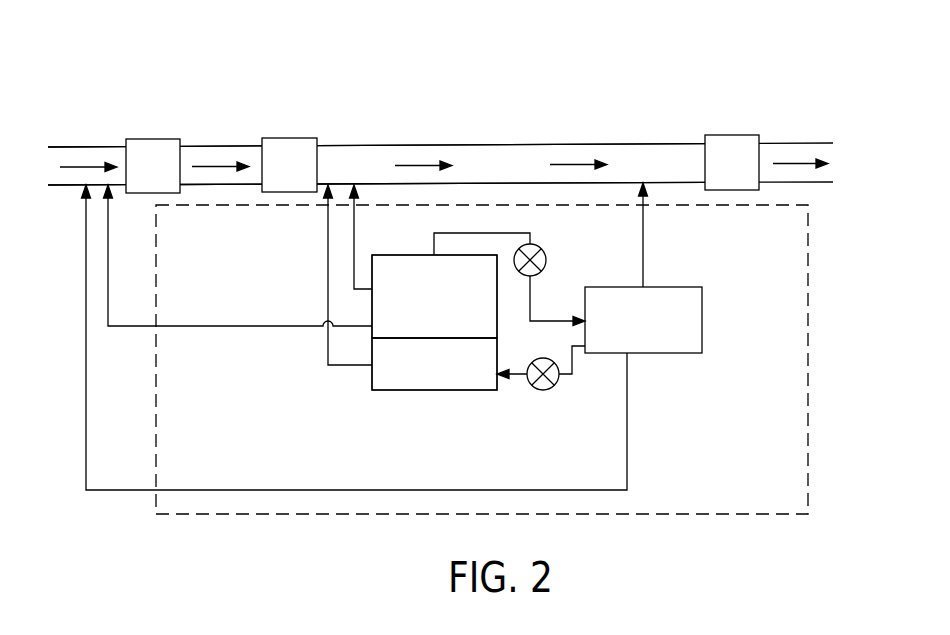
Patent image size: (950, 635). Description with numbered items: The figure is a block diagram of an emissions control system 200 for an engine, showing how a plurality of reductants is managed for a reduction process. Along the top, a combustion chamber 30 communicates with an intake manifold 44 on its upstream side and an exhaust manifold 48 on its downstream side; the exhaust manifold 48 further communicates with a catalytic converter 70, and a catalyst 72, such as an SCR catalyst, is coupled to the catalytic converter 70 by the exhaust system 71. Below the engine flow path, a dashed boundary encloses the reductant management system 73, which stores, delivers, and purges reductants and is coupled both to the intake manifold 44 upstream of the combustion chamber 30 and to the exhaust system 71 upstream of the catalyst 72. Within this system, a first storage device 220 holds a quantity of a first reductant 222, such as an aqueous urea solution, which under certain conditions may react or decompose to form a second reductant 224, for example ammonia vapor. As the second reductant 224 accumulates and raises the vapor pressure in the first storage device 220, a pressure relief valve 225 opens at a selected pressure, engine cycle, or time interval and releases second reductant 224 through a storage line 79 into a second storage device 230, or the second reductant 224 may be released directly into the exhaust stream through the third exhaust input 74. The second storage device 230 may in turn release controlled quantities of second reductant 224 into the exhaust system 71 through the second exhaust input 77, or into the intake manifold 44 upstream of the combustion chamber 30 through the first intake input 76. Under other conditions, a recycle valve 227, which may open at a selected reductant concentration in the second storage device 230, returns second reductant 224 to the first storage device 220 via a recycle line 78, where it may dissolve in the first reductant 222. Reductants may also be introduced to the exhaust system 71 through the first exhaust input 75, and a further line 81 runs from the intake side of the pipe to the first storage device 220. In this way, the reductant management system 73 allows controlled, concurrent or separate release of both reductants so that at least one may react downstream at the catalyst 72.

The emissions control system 200 is at (707, 70).
The intake manifold 44 is at (87, 147).
The combustion chamber 30 is at (152, 139).
The exhaust manifold 48 is at (218, 146).
The catalytic converter 70 is at (289, 138).
The exhaust system 71 is at (399, 145).
The catalyst 72 is at (731, 135).
The reductant management system 73 is at (812, 350).
The third exhaust input 74 is at (355, 217).
The first exhaust input 75 is at (328, 296).
The first intake input 76 is at (628, 443).
The second exhaust input 77 is at (645, 236).
The recycle line 78 is at (572, 376).
The storage line 79 is at (531, 290).
The signal line 81 is at (212, 328).
The first storage device 220 is at (432, 408).
The first reductant 222 is at (372, 380).
The second reductant 224 is at (488, 325).
The pressure relief valve 225 is at (547, 253).
The recycle valve 227 is at (540, 391).
The second storage device 230 is at (646, 354).